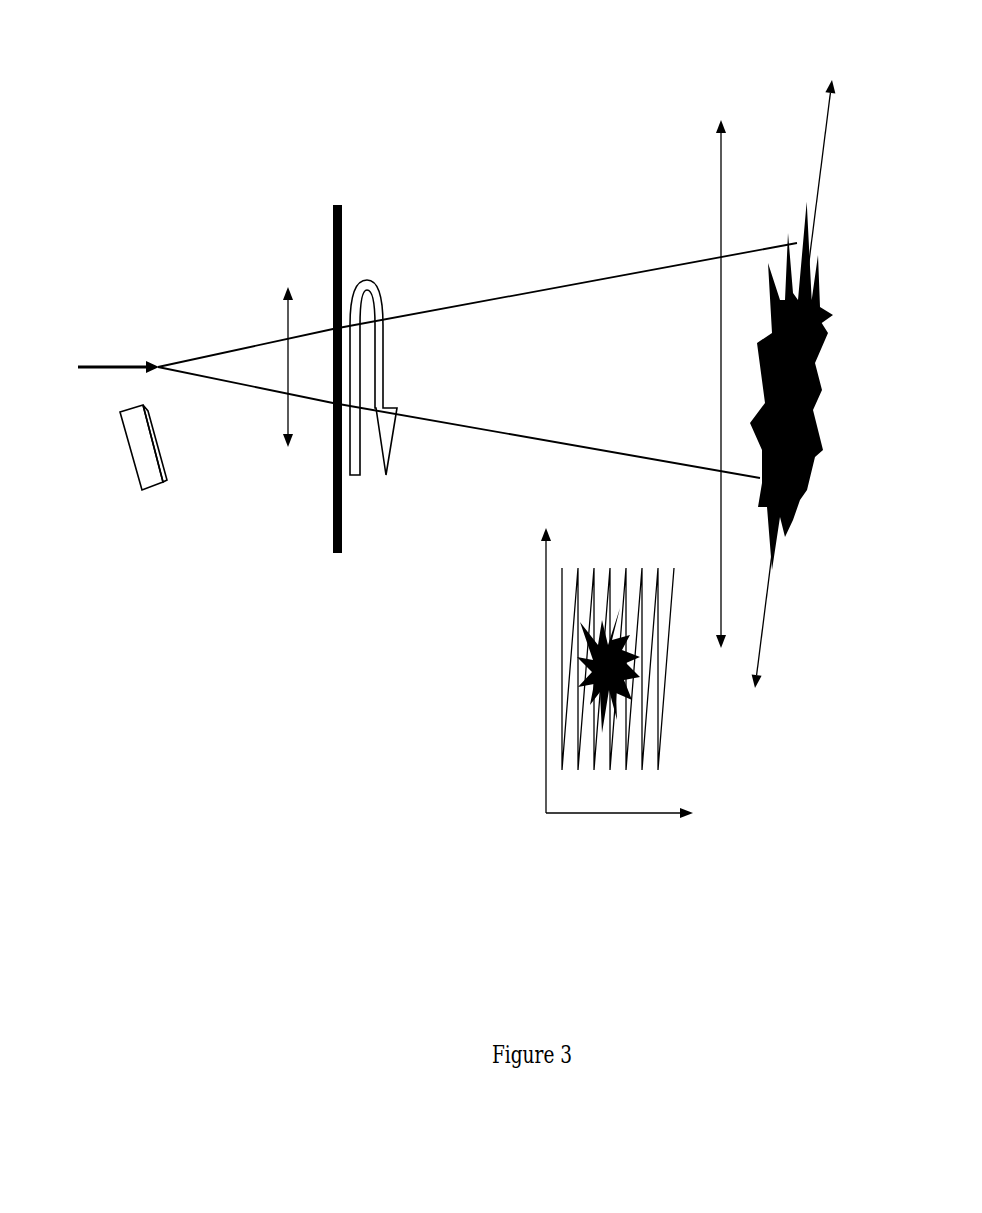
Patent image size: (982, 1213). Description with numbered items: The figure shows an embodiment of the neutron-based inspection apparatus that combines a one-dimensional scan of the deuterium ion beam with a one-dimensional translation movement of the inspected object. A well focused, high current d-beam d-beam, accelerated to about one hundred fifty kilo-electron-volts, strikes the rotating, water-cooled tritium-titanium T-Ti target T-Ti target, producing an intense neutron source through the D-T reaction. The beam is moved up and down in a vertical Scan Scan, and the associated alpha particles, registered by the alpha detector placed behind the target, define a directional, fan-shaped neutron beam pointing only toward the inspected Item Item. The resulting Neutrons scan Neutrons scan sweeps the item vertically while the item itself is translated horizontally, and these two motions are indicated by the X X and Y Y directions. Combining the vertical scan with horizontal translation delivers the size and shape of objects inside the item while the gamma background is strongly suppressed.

The element d-beam is at (86, 333).
The one-dimensional scan Scan is at (295, 330).
The T-target T-Ti target is at (334, 406).
The neutrons scan Neutrons scan is at (702, 348).
The inspected item Item is at (806, 386).
The X direction X is at (625, 799).
The Y direction Y is at (552, 634).